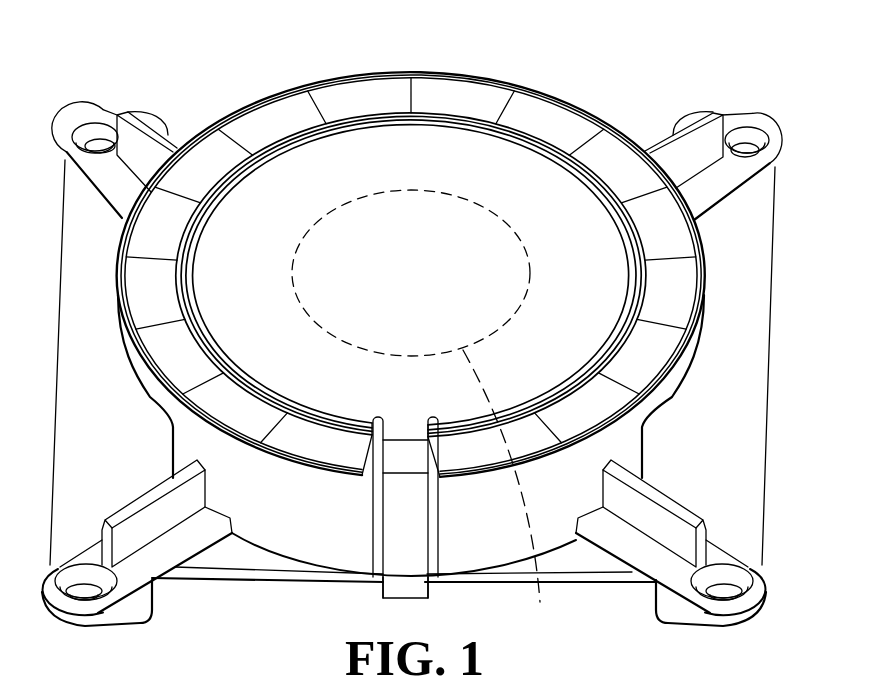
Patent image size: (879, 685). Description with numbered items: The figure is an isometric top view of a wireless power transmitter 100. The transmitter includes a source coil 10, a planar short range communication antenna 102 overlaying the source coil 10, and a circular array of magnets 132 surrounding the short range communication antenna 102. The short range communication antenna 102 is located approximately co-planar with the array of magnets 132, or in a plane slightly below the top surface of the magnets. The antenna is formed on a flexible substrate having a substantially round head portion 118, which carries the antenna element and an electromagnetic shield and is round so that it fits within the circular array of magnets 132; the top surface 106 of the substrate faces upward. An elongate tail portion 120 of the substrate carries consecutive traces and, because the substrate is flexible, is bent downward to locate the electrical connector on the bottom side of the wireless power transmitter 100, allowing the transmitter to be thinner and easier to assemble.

The wireless power transmitter 100 is at (188, 97).
The planar short range communication antenna 102 is at (297, 126).
The head portion 118 is at (517, 180).
The array of magnets 132 is at (627, 163).
The top surface 106 is at (421, 274).
The source coil 10 is at (509, 493).
The tail portion 120 is at (385, 584).